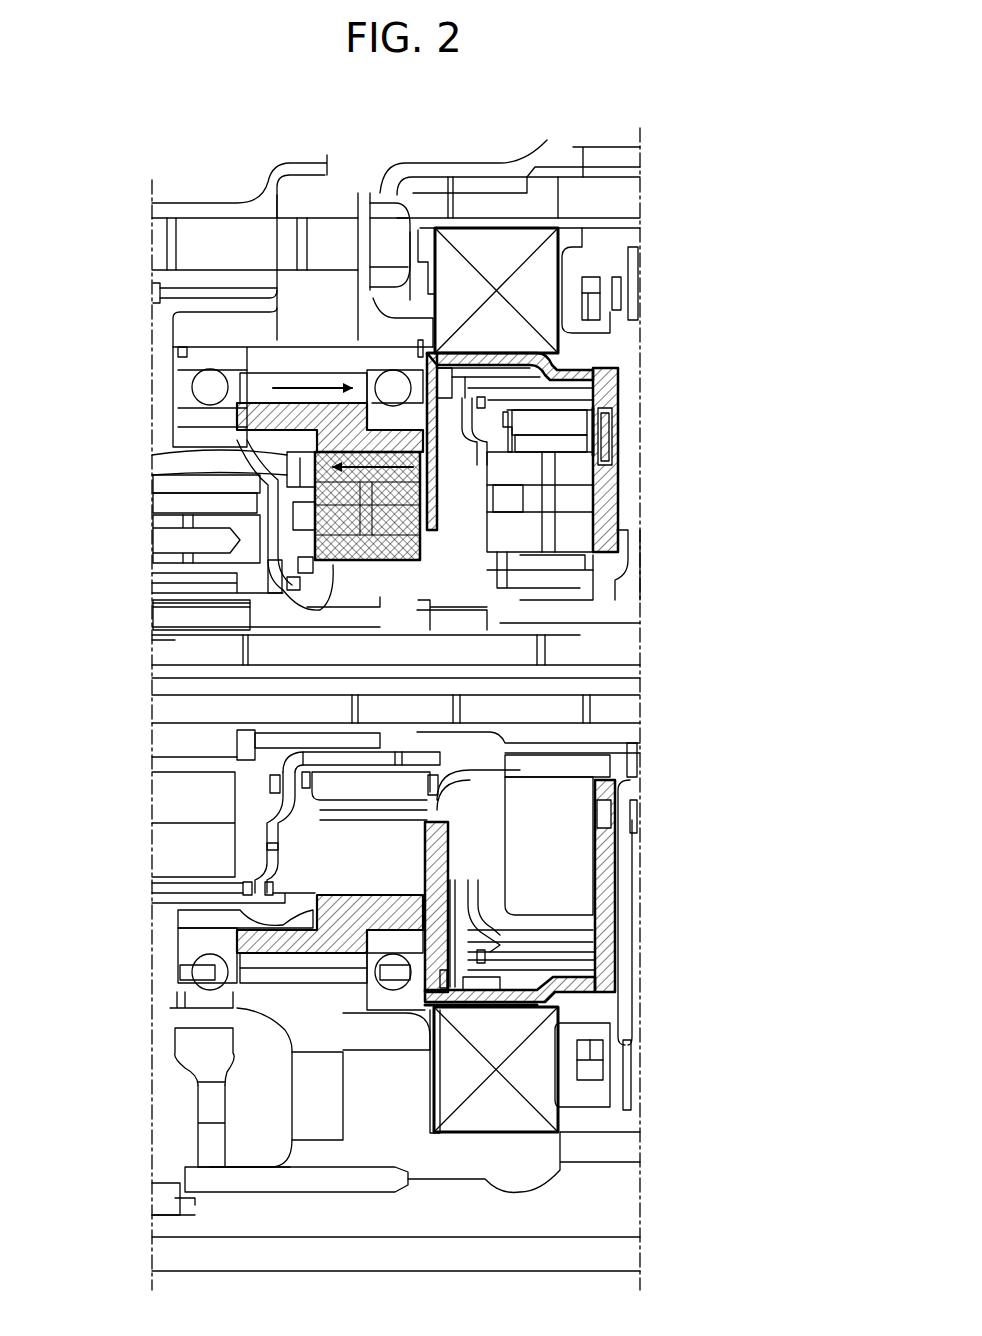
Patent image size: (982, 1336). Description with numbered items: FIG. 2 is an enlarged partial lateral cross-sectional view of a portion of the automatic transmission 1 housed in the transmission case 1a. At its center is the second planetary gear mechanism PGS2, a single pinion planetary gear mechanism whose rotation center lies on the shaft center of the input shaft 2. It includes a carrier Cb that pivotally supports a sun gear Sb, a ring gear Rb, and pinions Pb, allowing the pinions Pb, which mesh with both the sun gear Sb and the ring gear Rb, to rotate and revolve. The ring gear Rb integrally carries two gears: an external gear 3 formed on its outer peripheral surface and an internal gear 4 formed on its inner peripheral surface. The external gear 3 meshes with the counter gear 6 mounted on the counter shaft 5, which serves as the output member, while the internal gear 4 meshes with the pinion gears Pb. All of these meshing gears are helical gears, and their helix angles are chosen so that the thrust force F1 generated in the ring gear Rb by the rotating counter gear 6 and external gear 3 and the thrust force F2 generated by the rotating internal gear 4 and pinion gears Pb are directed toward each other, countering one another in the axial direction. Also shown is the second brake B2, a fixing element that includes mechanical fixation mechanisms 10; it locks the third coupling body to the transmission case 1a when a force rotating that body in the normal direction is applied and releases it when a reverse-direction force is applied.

The automatic transmission 1 is at (712, 185).
The transmission case 1a is at (473, 222).
The input shaft 2 is at (173, 650).
The external gear 3 is at (265, 382).
The internal gear 4 is at (257, 468).
The counter shaft 5 is at (193, 1222).
The counter gear 6 is at (293, 1027).
The mechanical fixation mechanism 10 is at (521, 679).
The second brake B2 is at (495, 247).
The ring gear Rb is at (233, 413).
The pinion Pb is at (233, 507).
The sun gear Sb is at (260, 593).
The carrier Cb is at (583, 367).
The second planetary gear mechanism PGS2 is at (313, 362).
The thrust force F1 is at (312, 350).
The thrust force F2 is at (373, 529).